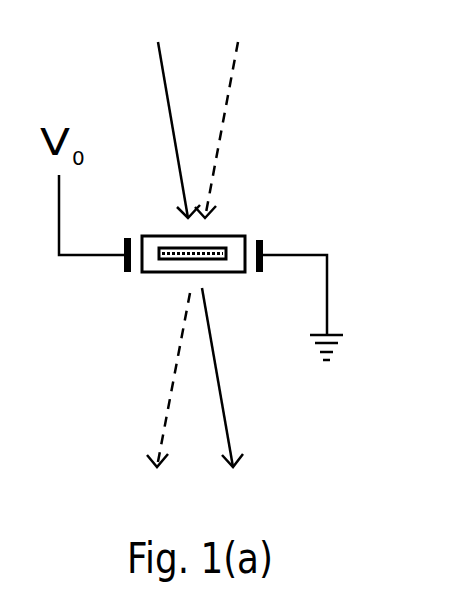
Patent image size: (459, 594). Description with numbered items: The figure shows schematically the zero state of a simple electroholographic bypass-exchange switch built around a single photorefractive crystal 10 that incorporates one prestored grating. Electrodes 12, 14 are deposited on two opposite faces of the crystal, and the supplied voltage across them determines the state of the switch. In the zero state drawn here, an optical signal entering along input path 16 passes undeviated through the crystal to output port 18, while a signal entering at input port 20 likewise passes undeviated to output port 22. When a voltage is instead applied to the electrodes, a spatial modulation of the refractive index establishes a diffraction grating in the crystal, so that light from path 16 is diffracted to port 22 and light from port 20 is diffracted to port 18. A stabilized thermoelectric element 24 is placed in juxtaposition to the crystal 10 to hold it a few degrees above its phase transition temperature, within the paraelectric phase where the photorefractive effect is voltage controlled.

The photorefractive crystal 10 is at (224, 237).
The electrode 12 is at (120, 263).
The electrode 14 is at (270, 242).
The input path 16 is at (170, 109).
The output port 18 is at (225, 400).
The input port 20 is at (222, 109).
The output port 22 is at (161, 403).
The thermoelectric element 24 is at (166, 258).